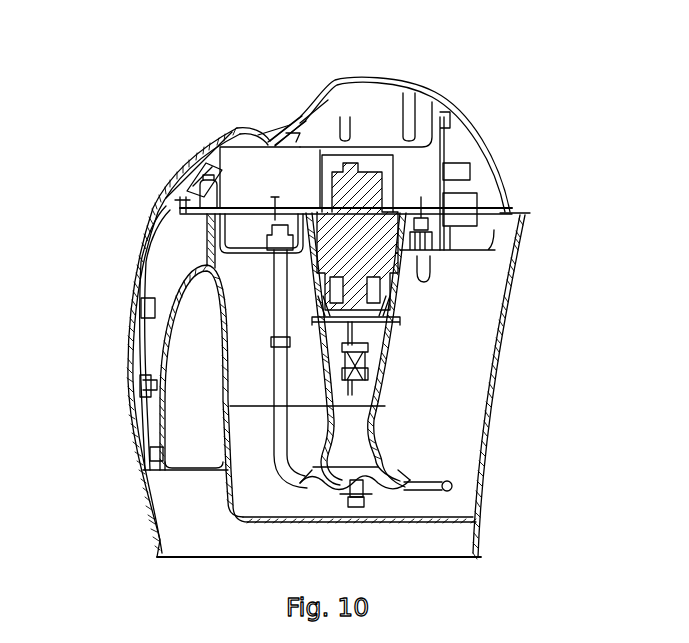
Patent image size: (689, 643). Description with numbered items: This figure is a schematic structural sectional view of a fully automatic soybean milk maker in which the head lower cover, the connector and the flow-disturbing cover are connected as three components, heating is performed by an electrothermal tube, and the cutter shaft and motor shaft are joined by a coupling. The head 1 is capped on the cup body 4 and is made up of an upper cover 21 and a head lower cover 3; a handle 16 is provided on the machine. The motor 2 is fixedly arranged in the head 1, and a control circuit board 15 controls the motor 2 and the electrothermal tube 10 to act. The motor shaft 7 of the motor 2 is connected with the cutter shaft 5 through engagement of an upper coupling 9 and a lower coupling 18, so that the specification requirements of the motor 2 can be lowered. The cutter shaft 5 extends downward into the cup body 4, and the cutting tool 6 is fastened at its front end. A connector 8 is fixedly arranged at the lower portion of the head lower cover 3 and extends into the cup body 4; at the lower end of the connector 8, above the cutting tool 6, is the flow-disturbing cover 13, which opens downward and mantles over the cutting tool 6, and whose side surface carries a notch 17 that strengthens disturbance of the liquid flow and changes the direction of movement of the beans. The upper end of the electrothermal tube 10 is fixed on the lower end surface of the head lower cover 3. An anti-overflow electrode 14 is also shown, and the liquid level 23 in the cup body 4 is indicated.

The head 1 is at (377, 121).
The upper cover 21 is at (483, 120).
The motor 2 is at (363, 228).
The control circuit board 15 is at (450, 213).
The head lower cover 3 is at (420, 262).
The anti-overflow electrode 14 is at (430, 275).
The cup body 4 is at (305, 363).
The motor shaft 7 is at (395, 300).
The upper coupling 9 is at (362, 347).
The lower coupling 18 is at (366, 374).
The connector 8 is at (385, 398).
The flow-disturbing cover 13 is at (372, 462).
The notch 17 is at (405, 479).
The electrothermal tube 10 is at (452, 487).
The cutting tool 6 is at (366, 493).
The cutter shaft 5 is at (378, 500).
The handle 16 is at (137, 300).
The liquid level 23 is at (250, 405).